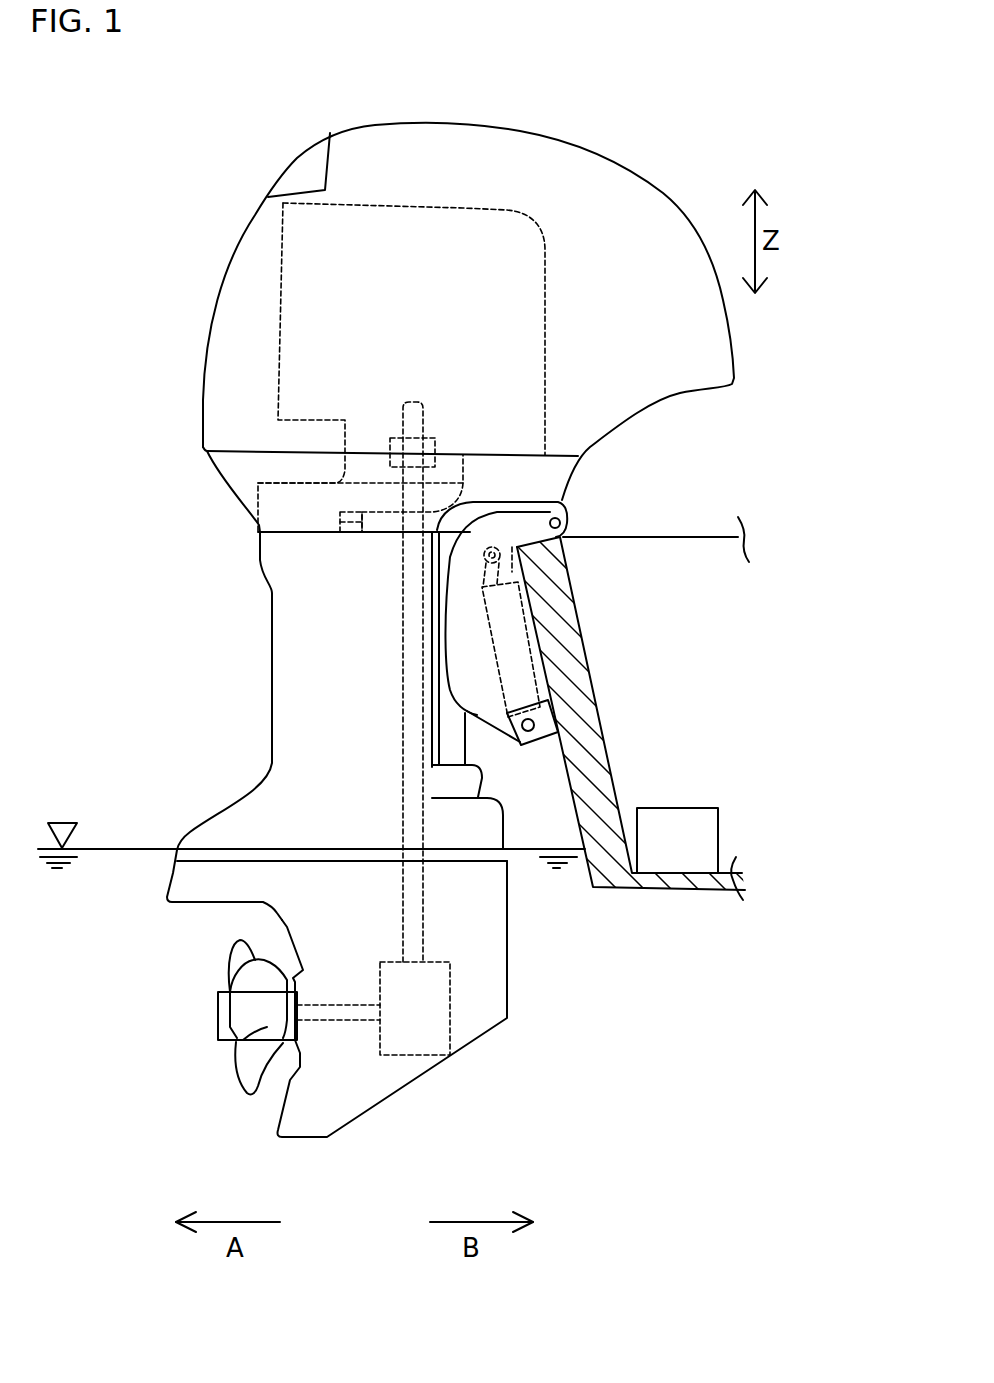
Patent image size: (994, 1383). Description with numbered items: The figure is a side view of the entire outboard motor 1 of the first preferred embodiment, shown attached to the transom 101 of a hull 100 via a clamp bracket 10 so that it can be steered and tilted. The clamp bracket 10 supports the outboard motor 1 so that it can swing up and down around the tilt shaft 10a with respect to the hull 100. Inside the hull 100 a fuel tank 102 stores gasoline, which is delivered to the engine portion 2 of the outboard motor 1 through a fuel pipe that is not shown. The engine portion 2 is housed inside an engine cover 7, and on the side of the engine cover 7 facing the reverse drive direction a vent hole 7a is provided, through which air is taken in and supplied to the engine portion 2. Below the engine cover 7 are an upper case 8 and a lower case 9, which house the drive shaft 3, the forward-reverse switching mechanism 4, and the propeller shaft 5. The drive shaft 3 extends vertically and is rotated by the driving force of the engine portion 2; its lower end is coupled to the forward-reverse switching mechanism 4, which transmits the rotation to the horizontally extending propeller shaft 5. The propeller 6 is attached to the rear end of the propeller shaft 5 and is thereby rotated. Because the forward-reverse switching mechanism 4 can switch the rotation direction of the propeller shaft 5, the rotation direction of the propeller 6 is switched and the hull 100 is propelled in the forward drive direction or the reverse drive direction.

The outboard motor 1 is at (253, 123).
The engine portion 2 is at (313, 362).
The drive shaft 3 is at (400, 720).
The forward-reverse switching mechanism 4 is at (450, 987).
The propeller shaft 5 is at (340, 1020).
The propeller 6 is at (228, 962).
The engine cover 7 is at (228, 280).
The vent hole 7a is at (289, 168).
The upper case 8 is at (268, 623).
The lower case 9 is at (280, 922).
The clamp bracket 10 is at (478, 576).
The tilt shaft 10a is at (570, 523).
The hull 100 is at (715, 537).
The transom 101 is at (598, 727).
The fuel tank 102 is at (697, 808).